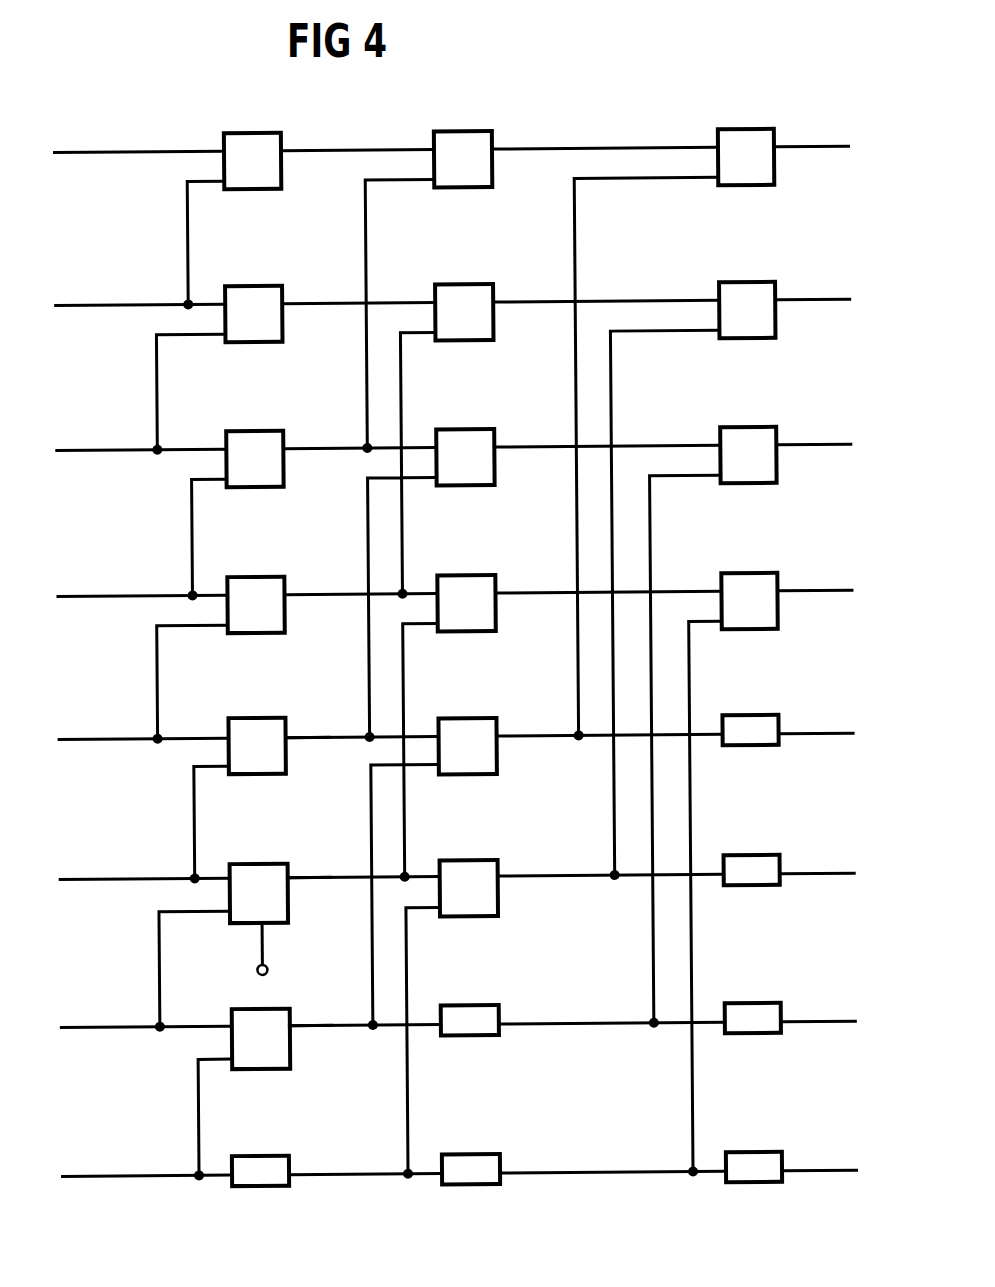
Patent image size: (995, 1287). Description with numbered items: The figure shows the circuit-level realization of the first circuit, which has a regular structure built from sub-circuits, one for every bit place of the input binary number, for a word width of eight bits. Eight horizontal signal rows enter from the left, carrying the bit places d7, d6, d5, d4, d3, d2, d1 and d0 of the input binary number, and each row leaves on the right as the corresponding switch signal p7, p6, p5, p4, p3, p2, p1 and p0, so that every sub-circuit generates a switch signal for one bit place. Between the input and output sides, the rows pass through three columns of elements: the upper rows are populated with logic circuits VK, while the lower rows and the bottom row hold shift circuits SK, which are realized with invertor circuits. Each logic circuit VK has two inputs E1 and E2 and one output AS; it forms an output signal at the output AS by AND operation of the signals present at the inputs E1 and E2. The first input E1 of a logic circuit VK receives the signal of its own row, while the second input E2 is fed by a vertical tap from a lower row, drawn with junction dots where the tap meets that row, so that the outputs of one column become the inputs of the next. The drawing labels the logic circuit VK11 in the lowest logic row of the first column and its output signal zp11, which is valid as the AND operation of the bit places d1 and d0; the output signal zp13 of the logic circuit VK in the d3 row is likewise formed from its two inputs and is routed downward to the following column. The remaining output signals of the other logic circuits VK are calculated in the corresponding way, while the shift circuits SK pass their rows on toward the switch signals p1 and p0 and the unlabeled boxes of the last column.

The logic circuit VK is at (274, 760).
The logic circuit VK11 is at (274, 1065).
The shift circuit SK is at (761, 1197).
The output AS is at (309, 862).
The first input E1 is at (243, 881).
The second input E2 is at (244, 904).
The output signal zp13 is at (380, 880).
The output signal zp11 is at (278, 1101).
The bit place d7 is at (136, 131).
The bit place d6 is at (137, 284).
The bit place d5 is at (138, 429).
The bit place d4 is at (139, 575).
The bit place d3 is at (140, 718).
The bit place d2 is at (141, 858).
The bit place d1 is at (143, 1006).
The bit place d0 is at (144, 1155).
The switch signal p7 is at (812, 125).
The switch signal p6 is at (813, 278).
The switch signal p5 is at (814, 423).
The switch signal p4 is at (815, 569).
The switch signal p3 is at (816, 712).
The switch signal p2 is at (817, 852).
The switch signal p1 is at (819, 1000).
The switch signal p0 is at (820, 1149).